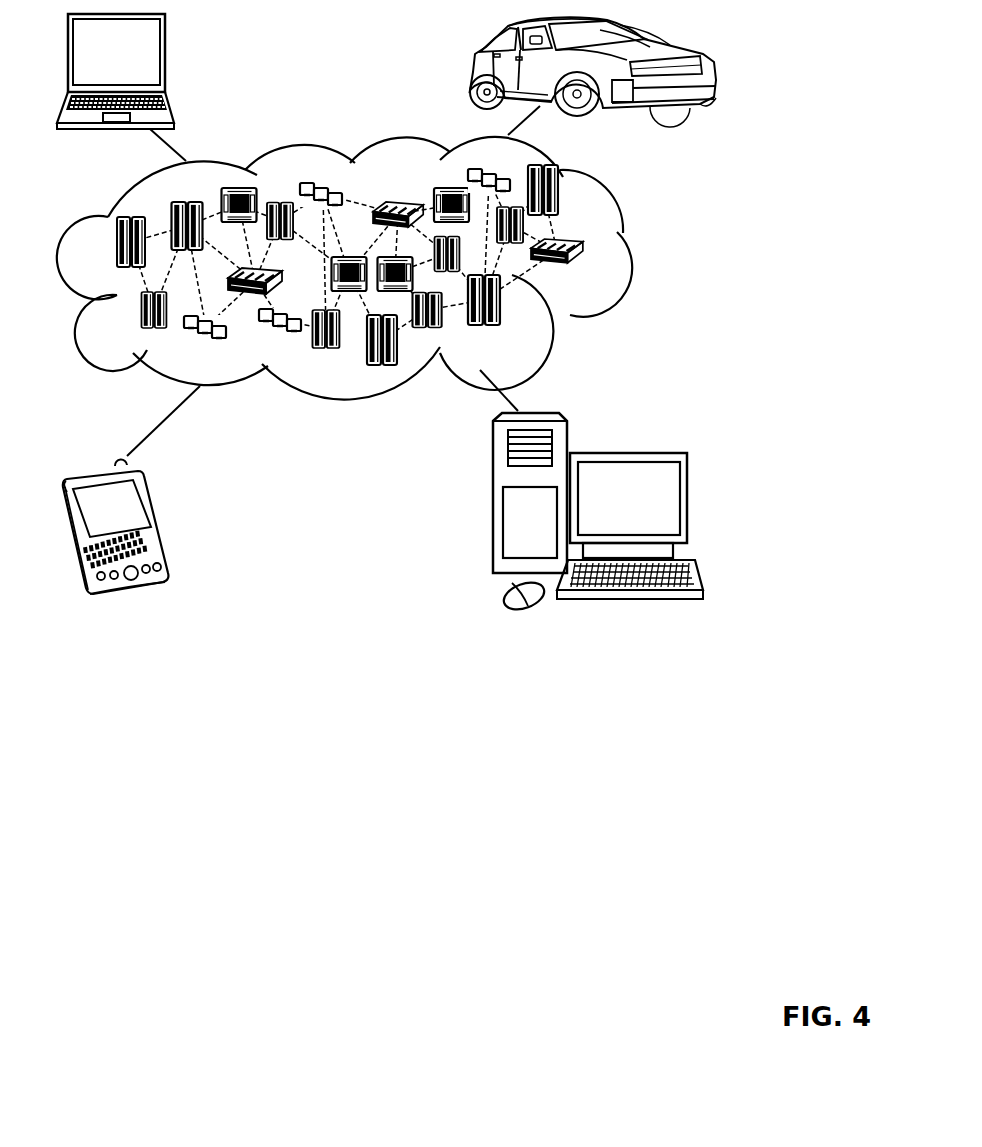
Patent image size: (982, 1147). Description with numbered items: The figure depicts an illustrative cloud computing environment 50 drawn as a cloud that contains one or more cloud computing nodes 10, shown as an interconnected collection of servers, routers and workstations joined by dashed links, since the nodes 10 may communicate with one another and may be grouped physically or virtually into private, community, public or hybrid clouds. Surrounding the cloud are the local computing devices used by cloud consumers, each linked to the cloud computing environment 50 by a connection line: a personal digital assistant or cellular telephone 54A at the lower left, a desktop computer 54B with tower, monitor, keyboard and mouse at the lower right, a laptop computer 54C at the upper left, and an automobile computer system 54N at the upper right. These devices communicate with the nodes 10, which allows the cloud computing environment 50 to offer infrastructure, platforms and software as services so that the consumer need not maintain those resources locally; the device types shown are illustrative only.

The cloud computing environment 50 is at (628, 250).
The cloud computing nodes 10 is at (386, 265).
The personal digital assistant (PDA) or cellular telephone 54A is at (160, 516).
The desktop computer 54B is at (627, 452).
The laptop computer 54C is at (165, 58).
The automobile computer system 54N is at (472, 67).